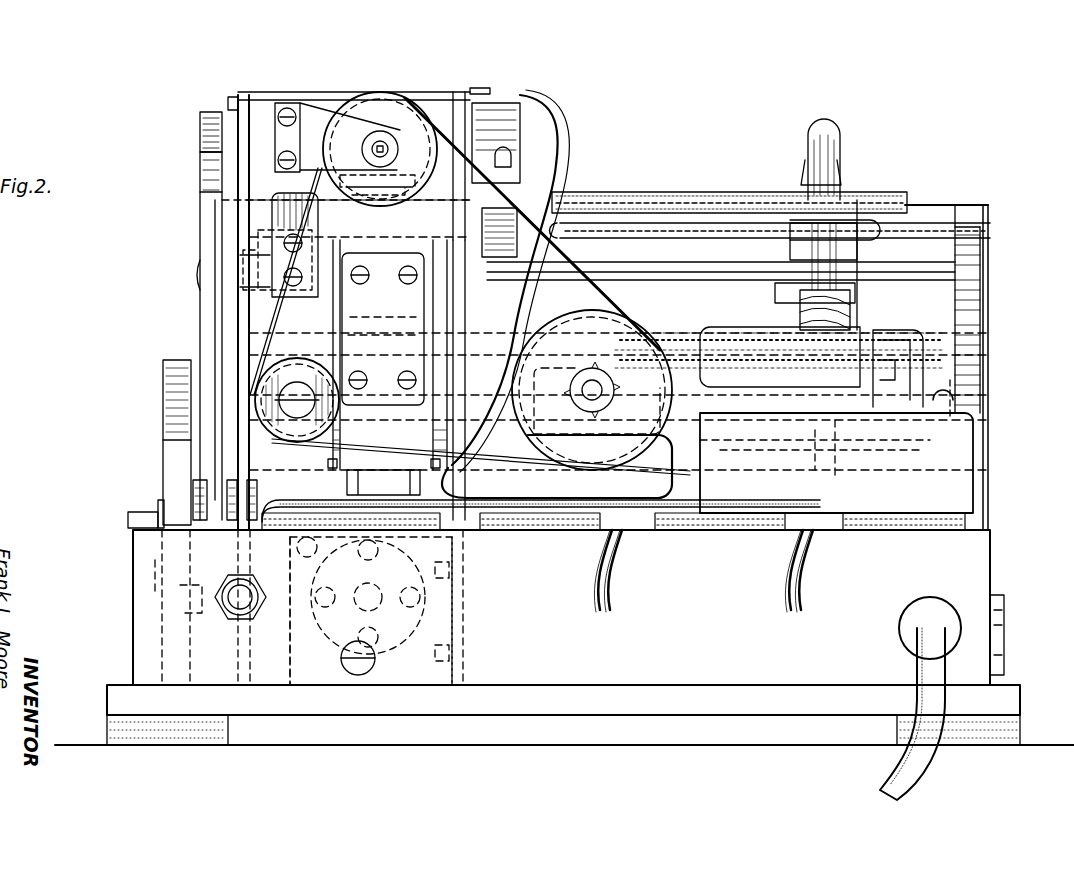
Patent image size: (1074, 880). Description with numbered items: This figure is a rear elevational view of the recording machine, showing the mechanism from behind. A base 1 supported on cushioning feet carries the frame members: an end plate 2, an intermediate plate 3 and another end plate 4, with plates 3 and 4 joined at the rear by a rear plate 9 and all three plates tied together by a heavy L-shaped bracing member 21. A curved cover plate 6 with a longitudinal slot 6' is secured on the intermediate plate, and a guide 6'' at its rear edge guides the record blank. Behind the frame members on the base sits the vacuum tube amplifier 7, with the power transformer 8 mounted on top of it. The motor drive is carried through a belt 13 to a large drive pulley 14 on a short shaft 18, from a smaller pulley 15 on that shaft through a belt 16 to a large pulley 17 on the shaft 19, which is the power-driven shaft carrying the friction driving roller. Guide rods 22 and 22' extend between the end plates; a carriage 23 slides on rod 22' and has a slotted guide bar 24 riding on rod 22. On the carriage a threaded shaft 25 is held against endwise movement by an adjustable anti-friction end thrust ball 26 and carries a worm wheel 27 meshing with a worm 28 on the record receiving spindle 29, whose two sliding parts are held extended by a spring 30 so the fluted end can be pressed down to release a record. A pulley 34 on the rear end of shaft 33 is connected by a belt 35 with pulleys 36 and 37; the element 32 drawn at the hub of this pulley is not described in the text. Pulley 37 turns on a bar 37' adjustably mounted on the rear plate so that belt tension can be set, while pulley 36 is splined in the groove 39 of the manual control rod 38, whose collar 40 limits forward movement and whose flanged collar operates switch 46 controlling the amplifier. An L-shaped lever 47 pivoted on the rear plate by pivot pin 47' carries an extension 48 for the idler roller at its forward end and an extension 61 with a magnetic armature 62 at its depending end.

The base 1 is at (600, 705).
The end plate 2 is at (990, 492).
The intermediate plate 3 is at (468, 88).
The end plate 4 is at (238, 93).
The curved cover plate 6 is at (738, 206).
The longitudinal slot 6' is at (855, 189).
The guide 6'' is at (729, 166).
The vacuum tube amplifier 7 is at (568, 607).
The power transformer 8 is at (836, 463).
The rear plate 9 is at (320, 90).
The belt 13 is at (175, 362).
The large drive pulley 14 is at (160, 392).
The smaller pulley 15 is at (192, 482).
The belt 16 is at (210, 170).
The large pulley 17 is at (198, 125).
The shaft 18 is at (133, 514).
The shaft 19 is at (195, 280).
The L-shaped bracing member 21 is at (942, 368).
The guide rod 22 is at (995, 306).
The guide rod 22' is at (990, 393).
The carriage 23 is at (736, 445).
The guide bar 24 is at (858, 283).
The threaded shaft 25 is at (703, 330).
The anti-friction end thrust ball 26 is at (906, 338).
The worm wheel 27 is at (837, 464).
The worm 28 is at (850, 303).
The record receiving spindle 29 is at (845, 185).
The spring 30 is at (823, 256).
The gear hub 32 is at (616, 392).
The shaft 33 is at (590, 400).
The pulley 34 is at (597, 318).
The belt 35 is at (562, 236).
The pulley 36 is at (393, 105).
The pulley 37 is at (297, 386).
The bar 37' is at (306, 245).
The rod 38 is at (364, 152).
The groove 39 is at (380, 142).
The collar 40 is at (388, 142).
The switch 46 is at (524, 140).
The L-shaped lever 47 is at (383, 193).
The pivot pin 47' is at (297, 196).
The extension 48 is at (398, 165).
The extension 61 is at (390, 355).
The magnetic armature 62 is at (330, 440).